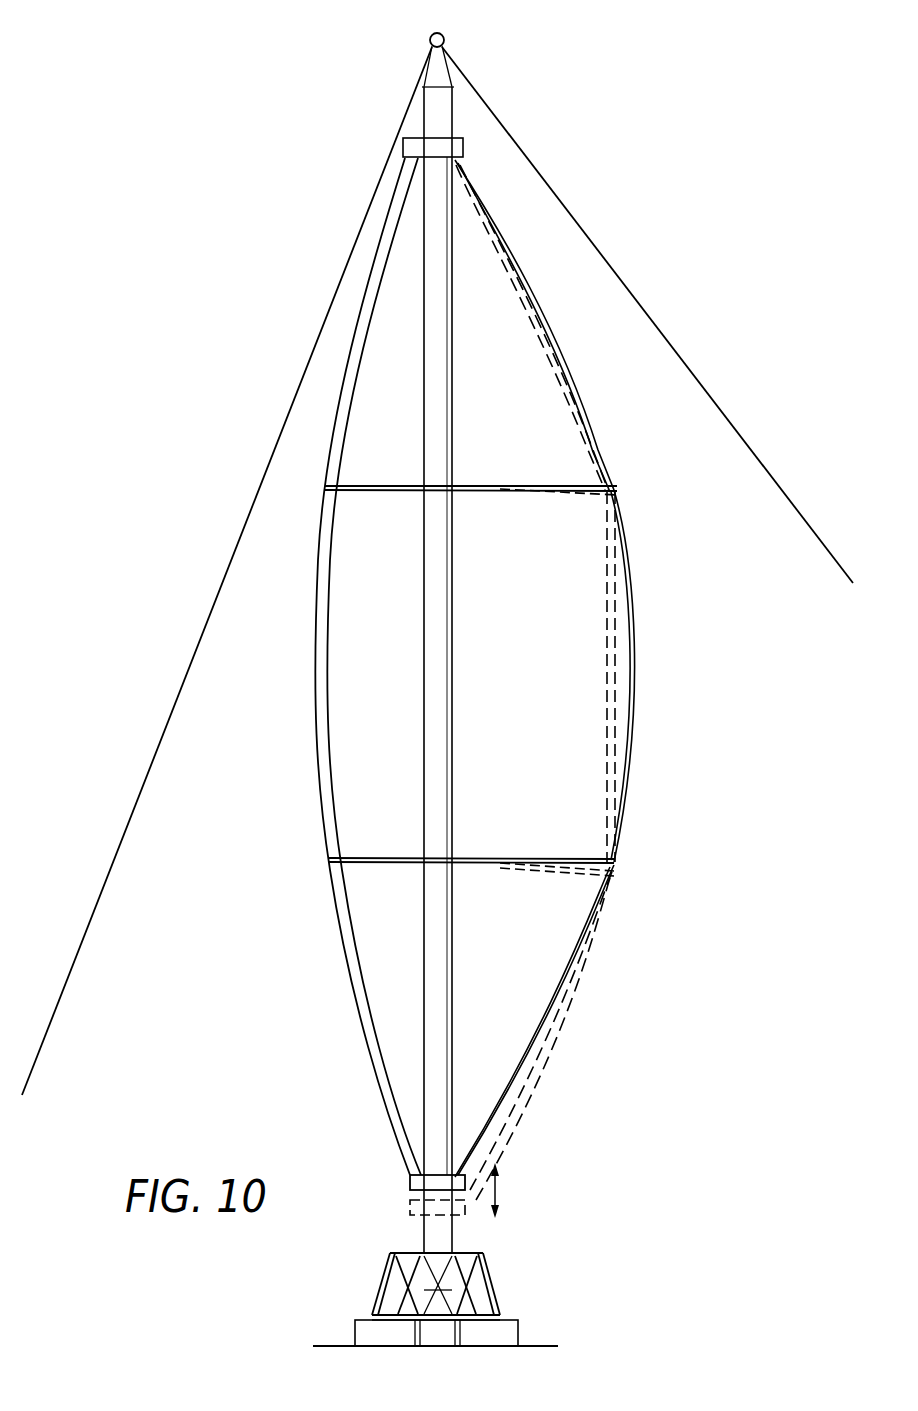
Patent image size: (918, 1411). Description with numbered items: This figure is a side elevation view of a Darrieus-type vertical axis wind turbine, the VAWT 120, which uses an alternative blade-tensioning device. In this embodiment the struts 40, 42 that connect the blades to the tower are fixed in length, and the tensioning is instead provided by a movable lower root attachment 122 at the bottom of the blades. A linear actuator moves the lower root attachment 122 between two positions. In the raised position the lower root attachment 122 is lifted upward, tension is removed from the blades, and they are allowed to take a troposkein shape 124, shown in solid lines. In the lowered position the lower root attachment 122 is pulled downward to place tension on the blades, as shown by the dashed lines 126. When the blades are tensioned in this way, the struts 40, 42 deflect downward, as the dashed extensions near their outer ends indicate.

The VAWT 120 is at (640, 207).
The movable lower root attachment 122 is at (410, 1180).
The troposkein shape 124 is at (640, 645).
The dashed lines 126 is at (607, 695).
The strut 40 is at (471, 839).
The strut 42 is at (471, 460).